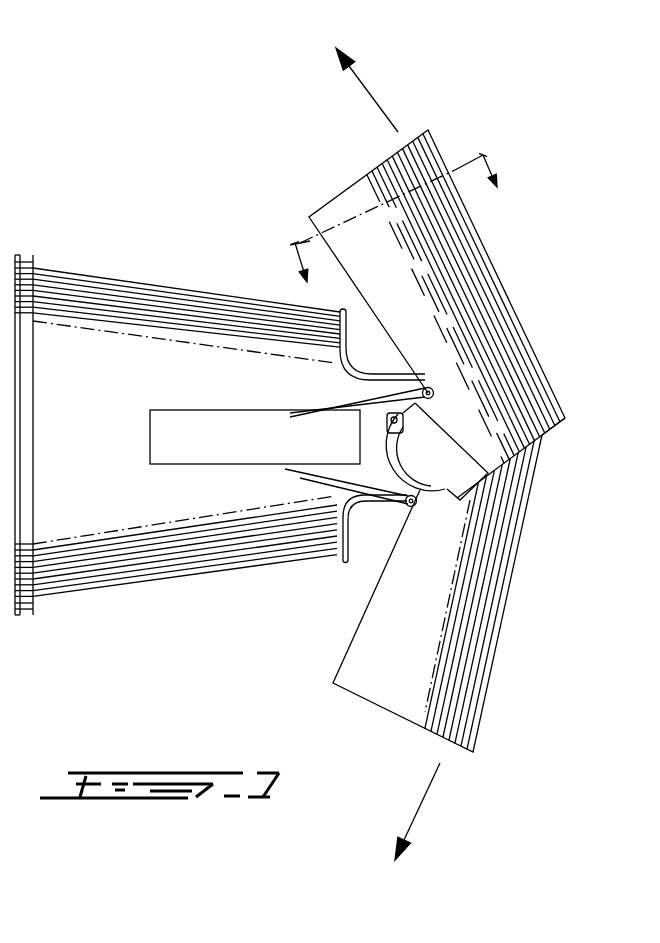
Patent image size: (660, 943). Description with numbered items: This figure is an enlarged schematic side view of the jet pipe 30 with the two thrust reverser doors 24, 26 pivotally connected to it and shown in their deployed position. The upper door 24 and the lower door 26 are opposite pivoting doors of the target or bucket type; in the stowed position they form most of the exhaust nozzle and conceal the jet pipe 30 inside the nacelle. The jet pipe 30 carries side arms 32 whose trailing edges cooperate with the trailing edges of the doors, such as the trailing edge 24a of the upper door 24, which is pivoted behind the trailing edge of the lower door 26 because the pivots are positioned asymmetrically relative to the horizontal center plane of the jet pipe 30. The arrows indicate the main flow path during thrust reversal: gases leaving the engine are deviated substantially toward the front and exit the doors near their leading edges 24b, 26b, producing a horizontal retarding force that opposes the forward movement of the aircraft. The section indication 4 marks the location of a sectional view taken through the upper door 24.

The door 24 is at (443, 140).
The trailing edge 24a is at (565, 418).
The leading edge 24b is at (427, 132).
The door 26 is at (480, 640).
The leading edge 26b is at (470, 755).
The jet pipe 30 is at (85, 342).
The side arms 32 is at (387, 387).
The section line 4- 4 is at (381, 207).